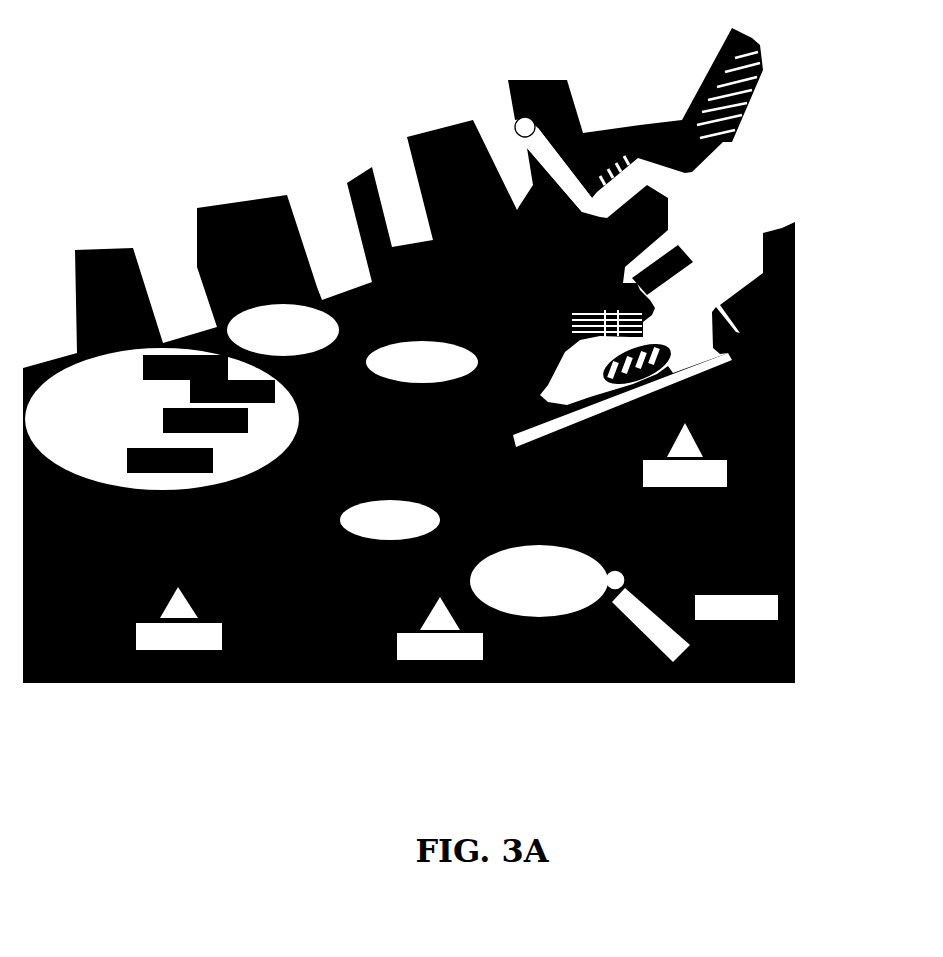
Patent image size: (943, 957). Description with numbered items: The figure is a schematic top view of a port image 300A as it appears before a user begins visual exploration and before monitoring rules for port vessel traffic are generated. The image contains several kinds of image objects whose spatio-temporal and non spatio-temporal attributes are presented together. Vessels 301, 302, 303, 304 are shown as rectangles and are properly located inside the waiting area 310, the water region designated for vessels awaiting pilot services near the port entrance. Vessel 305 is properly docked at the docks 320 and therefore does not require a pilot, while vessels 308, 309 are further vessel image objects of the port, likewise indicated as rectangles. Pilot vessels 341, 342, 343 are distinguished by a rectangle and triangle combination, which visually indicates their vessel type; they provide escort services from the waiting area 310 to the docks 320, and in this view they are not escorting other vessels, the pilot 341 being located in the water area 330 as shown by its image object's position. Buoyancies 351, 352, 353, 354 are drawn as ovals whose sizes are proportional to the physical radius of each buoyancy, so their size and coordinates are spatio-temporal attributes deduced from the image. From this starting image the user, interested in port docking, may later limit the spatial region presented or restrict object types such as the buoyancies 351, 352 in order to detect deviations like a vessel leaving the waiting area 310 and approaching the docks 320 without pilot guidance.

The port image before visual exploration 300A is at (650, 777).
The vessel 301 is at (88, 473).
The vessel 302 is at (123, 431).
The vessel 303 is at (148, 403).
The vessel 304 is at (101, 378).
The vessel 305 is at (543, 180).
The vessel 308 is at (634, 637).
The vessel 309 is at (718, 619).
The waiting area 310 is at (29, 429).
The docks 320 is at (666, 199).
The water area 330 is at (420, 725).
The pilot vessel 341 is at (666, 485).
The pilot vessel 342 is at (421, 658).
The pilot vessel 343 is at (159, 648).
The buoyancy 351 is at (405, 372).
The buoyancy 352 is at (267, 341).
The buoyancy 353 is at (522, 590).
The buoyancy 354 is at (369, 531).